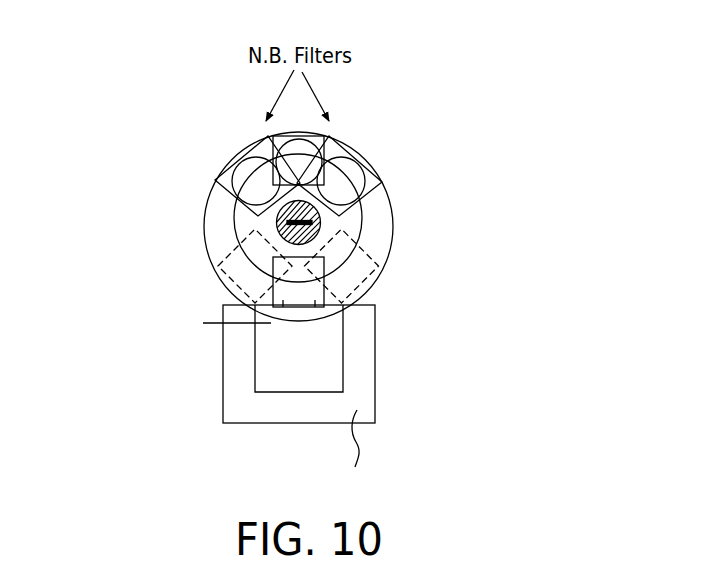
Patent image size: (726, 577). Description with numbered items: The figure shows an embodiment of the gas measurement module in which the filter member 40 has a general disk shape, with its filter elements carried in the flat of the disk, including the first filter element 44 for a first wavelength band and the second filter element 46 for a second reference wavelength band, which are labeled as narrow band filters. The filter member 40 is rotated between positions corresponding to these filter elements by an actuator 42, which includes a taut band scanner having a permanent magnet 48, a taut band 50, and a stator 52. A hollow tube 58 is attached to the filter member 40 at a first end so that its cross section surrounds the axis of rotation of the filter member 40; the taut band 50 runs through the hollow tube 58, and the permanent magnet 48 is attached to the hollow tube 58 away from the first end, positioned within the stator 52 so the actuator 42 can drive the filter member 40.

The filter member 40 is at (382, 227).
The actuator 42 is at (264, 400).
The first filter element 44 is at (228, 180).
The second filter element 46 is at (373, 184).
The permanent magnet 48 is at (324, 322).
The taut band 50 is at (394, 270).
The stator 52 is at (237, 378).
The hollow tube 58 is at (323, 228).